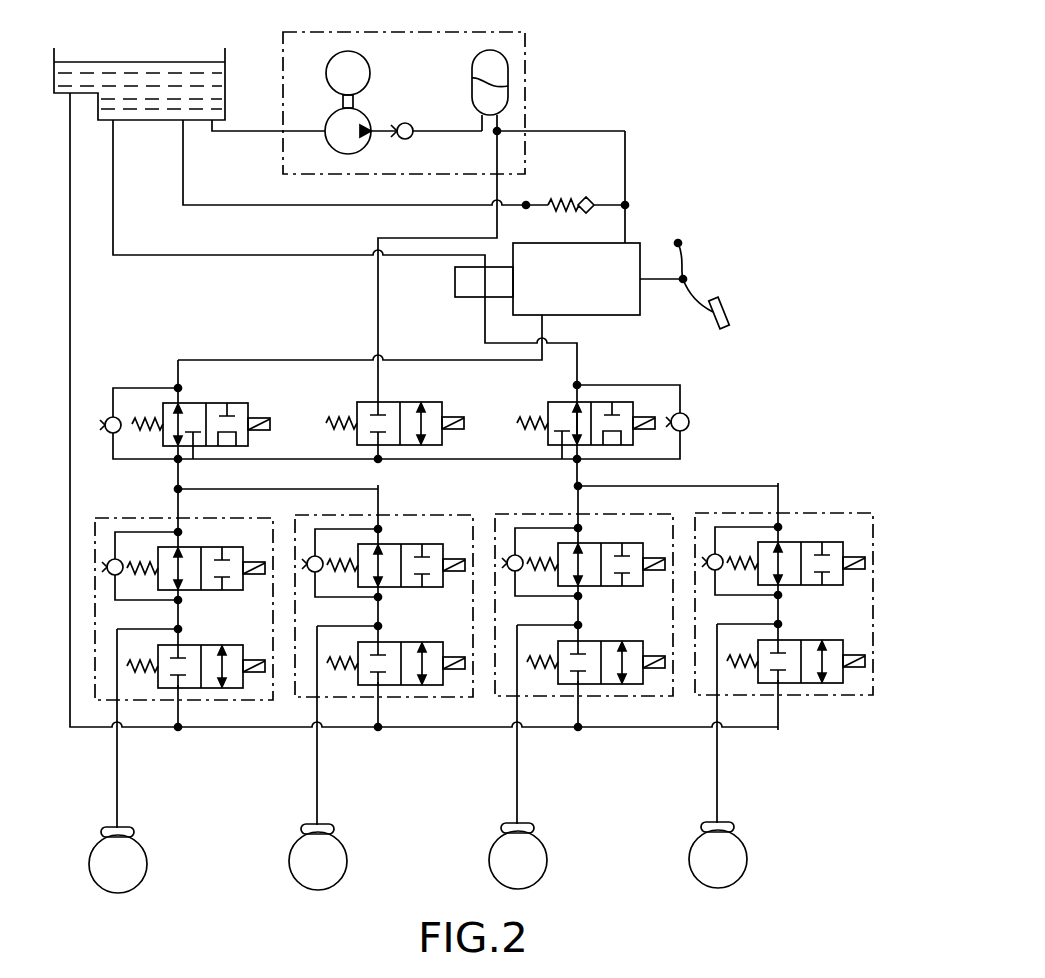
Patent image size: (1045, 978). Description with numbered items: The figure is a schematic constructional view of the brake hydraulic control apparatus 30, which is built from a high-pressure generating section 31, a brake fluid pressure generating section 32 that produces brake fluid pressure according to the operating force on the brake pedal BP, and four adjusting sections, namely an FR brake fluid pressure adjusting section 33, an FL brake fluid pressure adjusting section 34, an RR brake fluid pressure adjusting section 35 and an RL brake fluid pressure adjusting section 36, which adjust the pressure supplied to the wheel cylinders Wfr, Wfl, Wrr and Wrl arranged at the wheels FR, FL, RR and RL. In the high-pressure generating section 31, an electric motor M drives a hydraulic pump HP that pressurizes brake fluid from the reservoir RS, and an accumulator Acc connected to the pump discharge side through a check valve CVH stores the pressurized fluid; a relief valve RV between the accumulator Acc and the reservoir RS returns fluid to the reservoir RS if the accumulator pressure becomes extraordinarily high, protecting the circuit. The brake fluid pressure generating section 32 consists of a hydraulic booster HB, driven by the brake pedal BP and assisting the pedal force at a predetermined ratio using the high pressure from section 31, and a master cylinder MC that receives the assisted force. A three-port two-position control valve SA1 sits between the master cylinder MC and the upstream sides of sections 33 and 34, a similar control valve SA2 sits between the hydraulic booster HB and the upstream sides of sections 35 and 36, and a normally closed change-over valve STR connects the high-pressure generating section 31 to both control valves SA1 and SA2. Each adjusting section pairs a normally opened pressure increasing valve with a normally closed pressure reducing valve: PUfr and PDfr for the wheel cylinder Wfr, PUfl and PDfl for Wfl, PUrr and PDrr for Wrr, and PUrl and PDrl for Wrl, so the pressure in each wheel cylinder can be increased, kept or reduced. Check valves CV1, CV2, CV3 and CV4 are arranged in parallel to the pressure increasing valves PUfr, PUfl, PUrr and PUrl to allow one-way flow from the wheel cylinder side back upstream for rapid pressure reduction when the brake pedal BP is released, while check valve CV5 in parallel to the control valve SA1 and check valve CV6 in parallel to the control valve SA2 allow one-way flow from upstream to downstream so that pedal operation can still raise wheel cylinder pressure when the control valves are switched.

The brake hydraulic control apparatus 30 is at (686, 69).
The high-pressure generating section 31 is at (527, 37).
The brake fluid pressure generating section 32 is at (591, 299).
The FR brake fluid pressure adjusting section 33 is at (784, 592).
The FL brake fluid pressure adjusting section 34 is at (584, 593).
The RR brake fluid pressure adjusting section 35 is at (384, 594).
The RL brake fluid pressure adjusting section 36 is at (96, 519).
The reservoir RS is at (226, 78).
The electric motor M is at (348, 79).
The hydraulic pump HP is at (366, 149).
The check valve CVH is at (405, 123).
The accumulator Acc is at (484, 50).
The relief valve RV is at (554, 198).
The master cylinder MC is at (455, 282).
The hydraulic booster HB is at (576, 279).
The brake pedal BP is at (728, 313).
The check valve CV6 is at (106, 416).
The check valve CV5 is at (688, 413).
The check valve CV4 is at (108, 572).
The check valve CV3 is at (329, 590).
The check valve CV2 is at (529, 589).
The check valve CV1 is at (729, 588).
The control valve SA2 is at (195, 402).
The control valve SA1 is at (554, 402).
The change-over valve STR is at (396, 402).
The pressure increasing valve PUrl is at (192, 547).
The pressure reducing valve PDrl is at (192, 645).
The pressure increasing valve PUrr is at (396, 553).
The pressure reducing valve PDrr is at (396, 651).
The pressure increasing valve PUfl is at (596, 552).
The pressure reducing valve PDfl is at (596, 650).
The pressure increasing valve PUfr is at (796, 551).
The pressure reducing valve PDfr is at (796, 649).
The wheel cylinder Wrl is at (133, 832).
The wheel cylinder Wrr is at (338, 826).
The wheel cylinder Wfl is at (537, 825).
The wheel cylinder Wfr is at (738, 824).
The wheel RL is at (118, 864).
The wheel RR is at (318, 861).
The wheel FL is at (518, 860).
The wheel FR is at (718, 859).